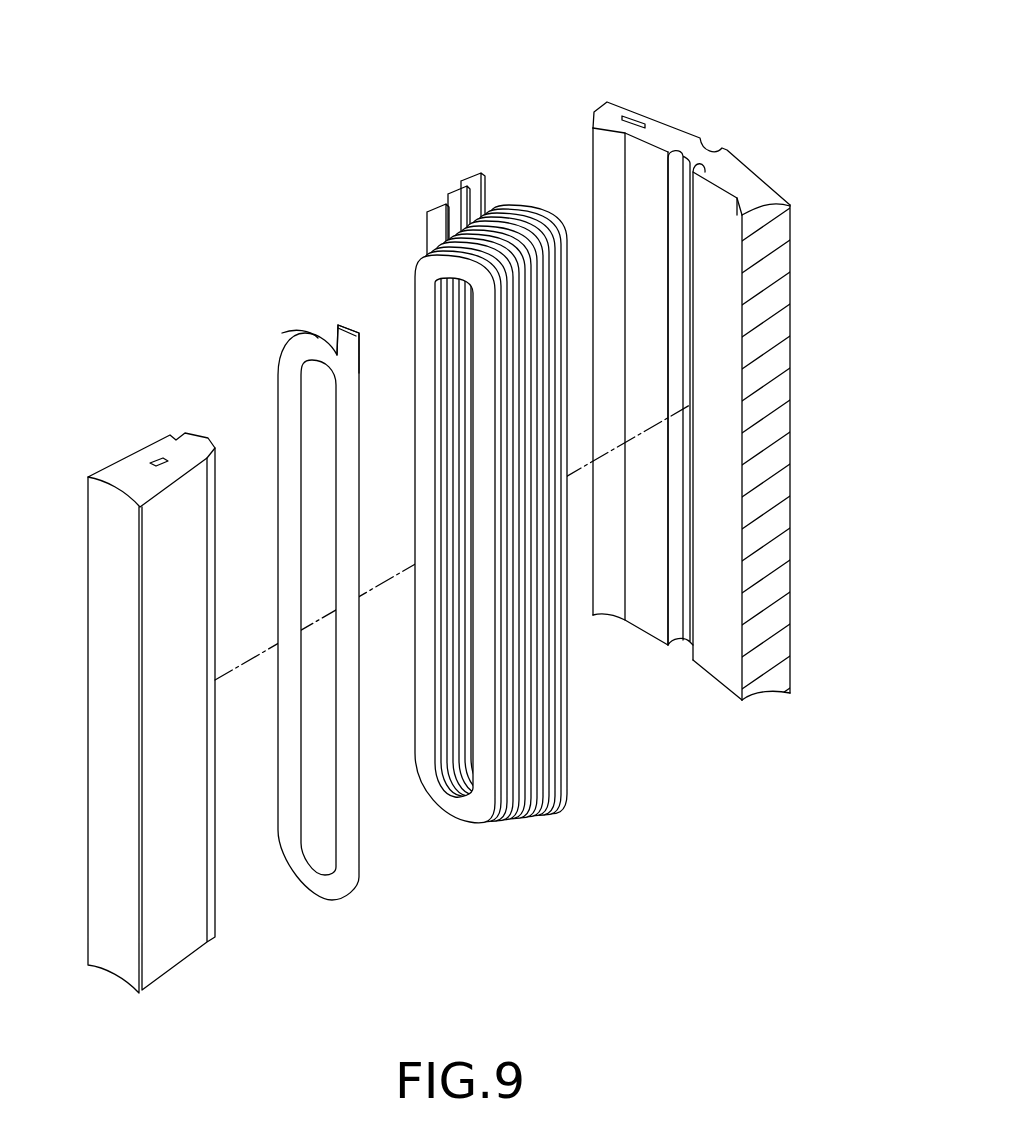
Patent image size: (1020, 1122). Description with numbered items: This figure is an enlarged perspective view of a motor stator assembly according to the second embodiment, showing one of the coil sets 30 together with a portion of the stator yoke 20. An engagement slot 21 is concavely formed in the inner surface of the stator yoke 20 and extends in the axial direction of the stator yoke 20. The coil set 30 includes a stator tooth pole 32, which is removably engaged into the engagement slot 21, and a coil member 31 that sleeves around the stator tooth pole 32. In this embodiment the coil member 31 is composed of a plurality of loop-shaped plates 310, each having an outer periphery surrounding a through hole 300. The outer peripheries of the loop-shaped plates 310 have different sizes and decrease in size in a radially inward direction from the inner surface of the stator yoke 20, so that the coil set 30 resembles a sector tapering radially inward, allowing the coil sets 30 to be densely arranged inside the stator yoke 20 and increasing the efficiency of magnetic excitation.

The stator yoke 20 is at (668, 104).
The engagement slot 21 is at (700, 170).
The coil set 30 is at (430, 172).
The coil member 31 is at (494, 513).
The through hole 300 is at (310, 400).
The loop-shaped plate 310 is at (293, 347).
The stator tooth pole 32 is at (132, 473).